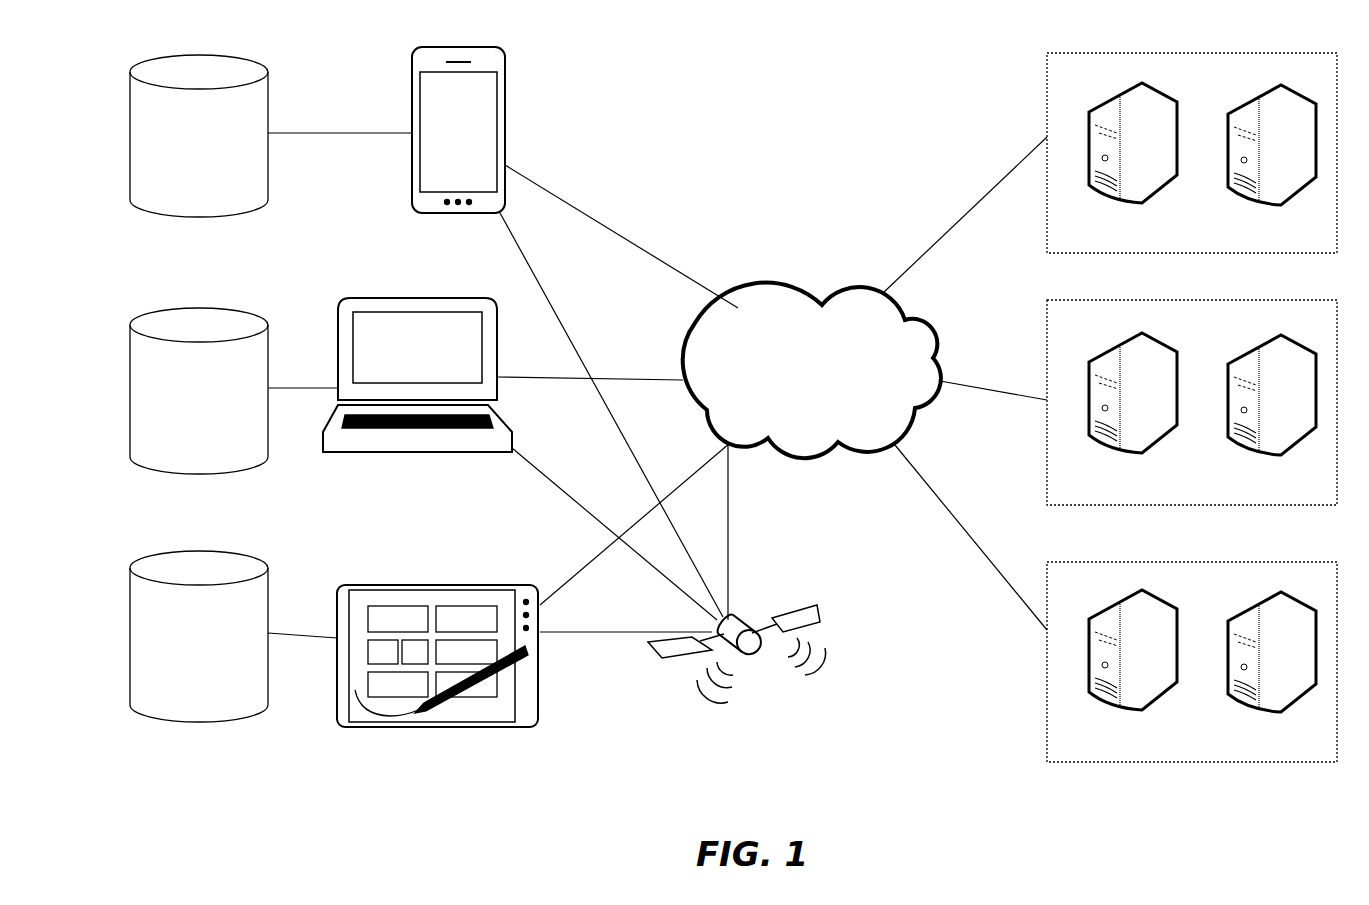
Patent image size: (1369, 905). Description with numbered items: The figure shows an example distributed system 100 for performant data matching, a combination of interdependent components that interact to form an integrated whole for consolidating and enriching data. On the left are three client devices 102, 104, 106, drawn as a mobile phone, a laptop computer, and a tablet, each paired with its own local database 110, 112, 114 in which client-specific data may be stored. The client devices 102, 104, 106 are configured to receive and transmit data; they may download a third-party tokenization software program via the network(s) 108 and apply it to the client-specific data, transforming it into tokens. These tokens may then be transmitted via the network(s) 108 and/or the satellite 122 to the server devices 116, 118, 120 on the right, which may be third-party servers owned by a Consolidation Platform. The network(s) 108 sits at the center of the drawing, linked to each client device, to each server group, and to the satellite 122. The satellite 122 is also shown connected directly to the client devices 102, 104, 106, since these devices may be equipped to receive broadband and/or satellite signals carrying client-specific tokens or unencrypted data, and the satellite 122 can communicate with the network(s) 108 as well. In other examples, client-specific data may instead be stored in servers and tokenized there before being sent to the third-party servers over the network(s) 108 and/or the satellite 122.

The system 100 is at (828, 98).
The client device 102 is at (439, 147).
The client device 104 is at (401, 499).
The client device 106 is at (421, 778).
The network(s) 108 is at (794, 414).
The local database 110 is at (181, 145).
The local database 112 is at (181, 400).
The local database 114 is at (181, 645).
The server device 116 is at (1176, 242).
The server device 118 is at (1176, 492).
The server device 120 is at (1176, 749).
The satellite 122 is at (719, 750).